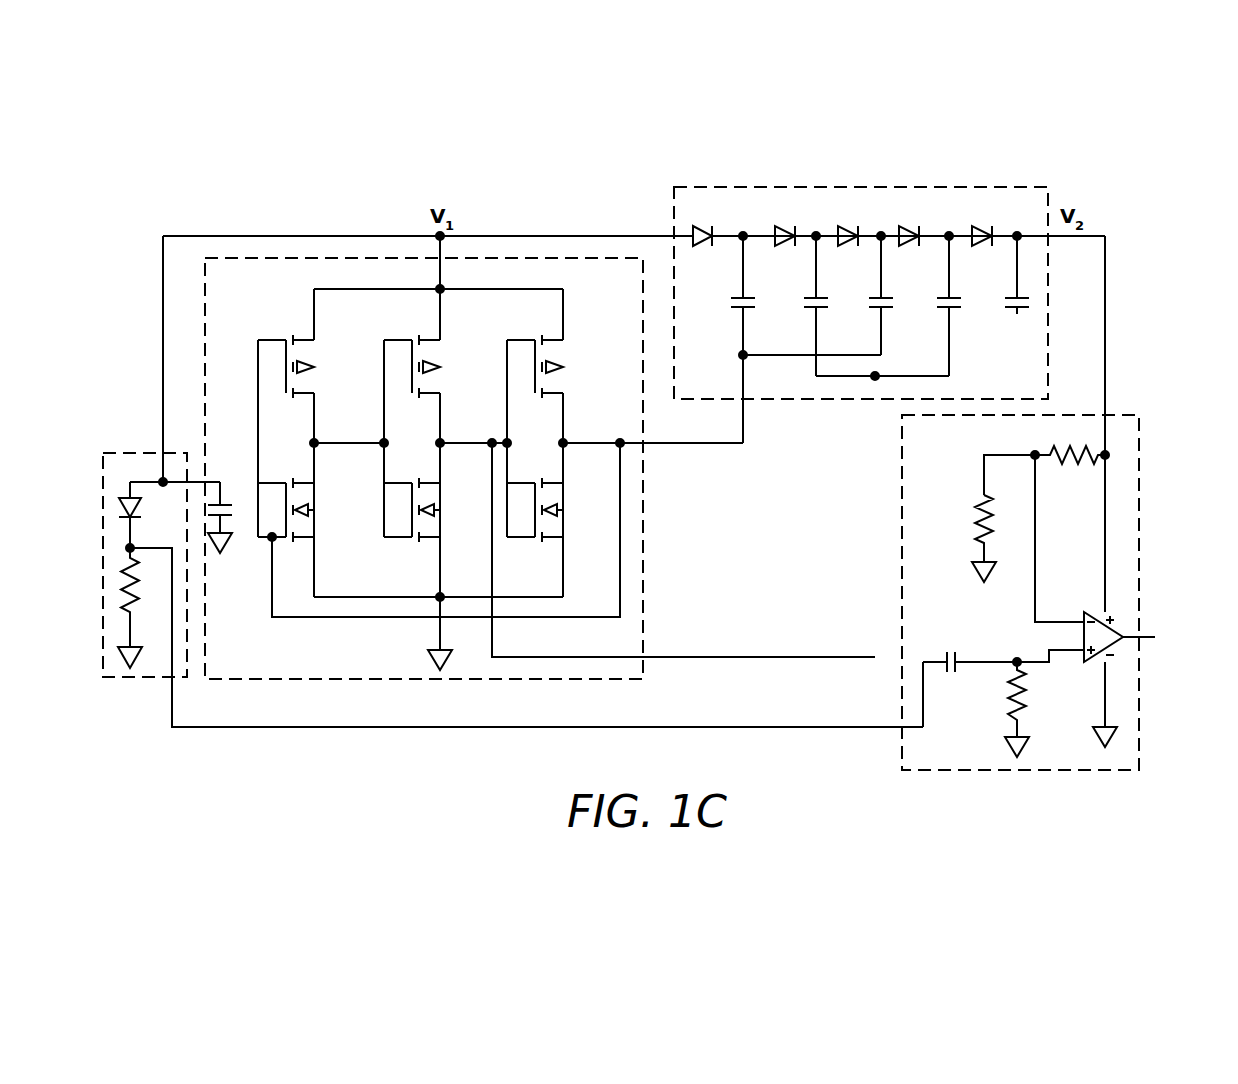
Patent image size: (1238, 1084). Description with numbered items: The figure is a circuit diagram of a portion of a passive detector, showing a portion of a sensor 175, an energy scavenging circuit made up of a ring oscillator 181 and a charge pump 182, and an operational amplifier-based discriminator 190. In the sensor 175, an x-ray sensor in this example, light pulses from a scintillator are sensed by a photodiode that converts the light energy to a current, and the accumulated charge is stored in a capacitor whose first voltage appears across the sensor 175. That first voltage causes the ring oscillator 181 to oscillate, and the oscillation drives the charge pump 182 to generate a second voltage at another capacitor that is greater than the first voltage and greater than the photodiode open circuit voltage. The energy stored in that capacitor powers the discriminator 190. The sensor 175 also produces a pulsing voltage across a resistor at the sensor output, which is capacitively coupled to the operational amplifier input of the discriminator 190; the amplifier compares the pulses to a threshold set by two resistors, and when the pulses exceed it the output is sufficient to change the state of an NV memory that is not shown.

The sensor 175 is at (140, 453).
The ring oscillator 181 is at (510, 258).
The charge pump 182 is at (982, 187).
The discriminator 190 is at (1123, 413).